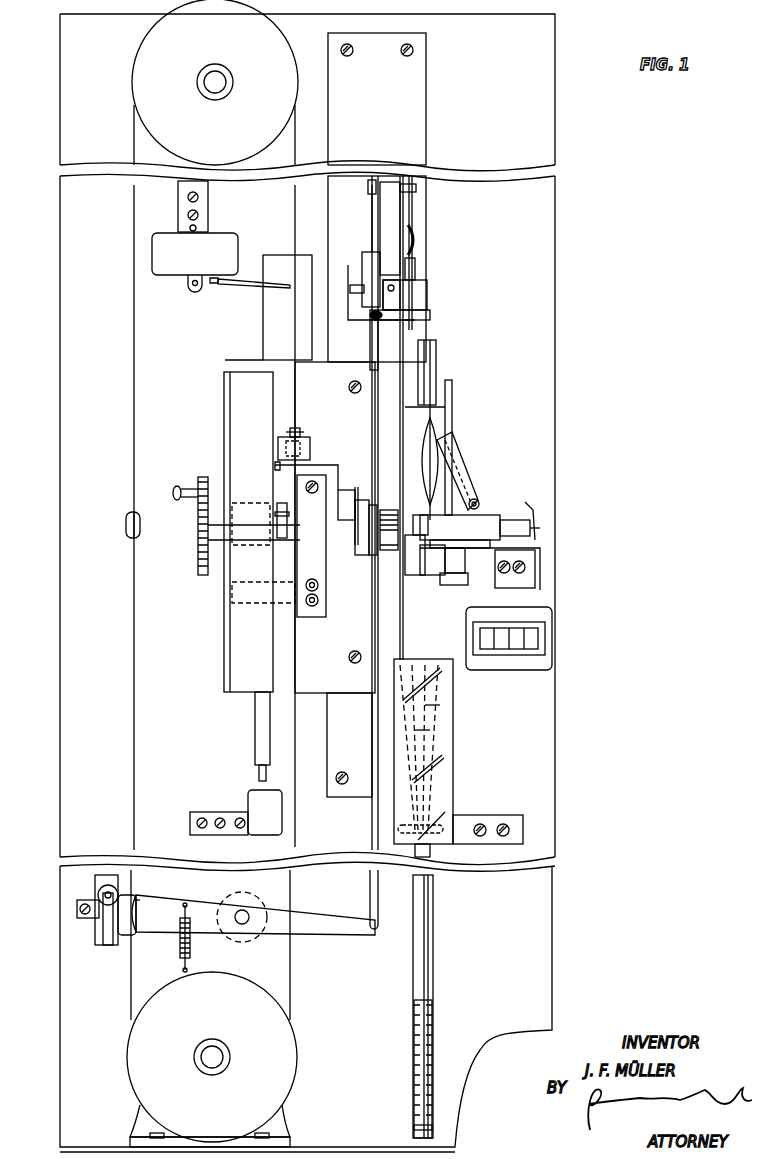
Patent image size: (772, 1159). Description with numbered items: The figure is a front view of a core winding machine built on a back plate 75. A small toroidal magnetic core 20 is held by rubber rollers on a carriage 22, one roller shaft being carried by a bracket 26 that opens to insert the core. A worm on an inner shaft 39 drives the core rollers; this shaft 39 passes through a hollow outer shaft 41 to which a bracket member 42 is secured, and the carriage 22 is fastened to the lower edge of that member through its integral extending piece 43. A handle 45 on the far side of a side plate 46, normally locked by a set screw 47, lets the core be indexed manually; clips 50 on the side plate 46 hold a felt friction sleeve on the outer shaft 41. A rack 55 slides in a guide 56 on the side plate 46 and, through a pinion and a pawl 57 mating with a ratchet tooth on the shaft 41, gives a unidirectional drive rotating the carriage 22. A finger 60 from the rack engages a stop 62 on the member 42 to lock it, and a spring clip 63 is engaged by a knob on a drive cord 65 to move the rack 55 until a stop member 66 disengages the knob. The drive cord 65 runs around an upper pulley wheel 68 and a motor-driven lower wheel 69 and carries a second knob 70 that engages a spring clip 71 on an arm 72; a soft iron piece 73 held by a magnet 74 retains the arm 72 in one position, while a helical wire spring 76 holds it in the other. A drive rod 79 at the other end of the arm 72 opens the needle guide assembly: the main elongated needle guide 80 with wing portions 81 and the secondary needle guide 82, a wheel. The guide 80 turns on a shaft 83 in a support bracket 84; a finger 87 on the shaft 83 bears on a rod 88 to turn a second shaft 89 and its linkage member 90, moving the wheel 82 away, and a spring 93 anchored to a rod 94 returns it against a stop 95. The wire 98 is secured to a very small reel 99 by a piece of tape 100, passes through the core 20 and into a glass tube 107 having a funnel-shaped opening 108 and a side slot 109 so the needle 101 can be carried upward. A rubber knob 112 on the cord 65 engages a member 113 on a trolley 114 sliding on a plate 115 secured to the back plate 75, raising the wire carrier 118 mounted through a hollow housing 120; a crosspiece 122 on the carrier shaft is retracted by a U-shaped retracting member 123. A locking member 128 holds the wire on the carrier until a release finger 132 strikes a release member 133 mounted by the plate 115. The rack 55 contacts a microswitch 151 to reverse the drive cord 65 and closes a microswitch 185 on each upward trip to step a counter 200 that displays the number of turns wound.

The toroidal magnetic core 20 is at (455, 585).
The carriage 22 is at (412, 576).
The bracket 26 is at (455, 570).
The shaft 39 is at (357, 488).
The hollow outer shaft 41 is at (288, 548).
The bracket member 42 is at (358, 556).
The integral extending piece 43 is at (372, 557).
The handle 45 is at (197, 565).
The side plate 46 is at (224, 638).
The set screw 47 is at (177, 486).
The clips 50 is at (312, 617).
The rack 55 is at (255, 715).
The guide 56 is at (240, 416).
The pawl 57 is at (277, 507).
The finger 60 is at (333, 464).
The stop 62 is at (346, 489).
The spring clip 63 is at (308, 438).
The drive cord 65 is at (294, 198).
The stop member 66 is at (262, 287).
The upper pulley wheel 68 is at (150, 50).
The lower wheel 69 is at (286, 1067).
The second knob 70 is at (125, 526).
The spring clip 71 is at (136, 900).
The arm 72 is at (205, 902).
The soft iron piece 73 is at (107, 946).
The magnet 74 is at (100, 880).
The back plate 75 is at (80, 949).
The helical wire spring 76 is at (190, 945).
The drive rod 79 is at (369, 877).
The main elongated needle guide 80 is at (426, 450).
The wing portions 81 is at (428, 430).
The secondary needle guide 82 is at (437, 352).
The shaft 83 is at (428, 293).
The support bracket 84 is at (412, 316).
The finger 87 is at (366, 252).
The rod 88 is at (371, 216).
The second shaft 89 is at (414, 190).
The linkage member 90 is at (413, 212).
The spring 93 is at (414, 238).
The rod 94 is at (414, 260).
The stop 95 is at (394, 338).
The wire 98 is at (420, 633).
The reel 99 is at (390, 555).
The piece of tape 100 is at (432, 576).
The needle 101 is at (433, 1025).
The glass tube 107 is at (445, 772).
The funnel-shaped opening 108 is at (450, 712).
The side slot 109 is at (440, 733).
The rubber knob 112 is at (297, 428).
The member 113 is at (268, 254).
The trolley 114 is at (453, 414).
The plate 115 is at (418, 99).
The wire carrier 118 is at (418, 515).
The hollow housing 120 is at (458, 549).
The crosspiece 122 is at (535, 512).
The U-shaped retracting member 123 is at (536, 556).
The locking member 128 is at (460, 460).
The release finger 132 is at (480, 498).
The release member 133 is at (540, 536).
The microswitch 151 is at (250, 792).
The microswitch 185 is at (172, 262).
The counter 200 is at (553, 638).